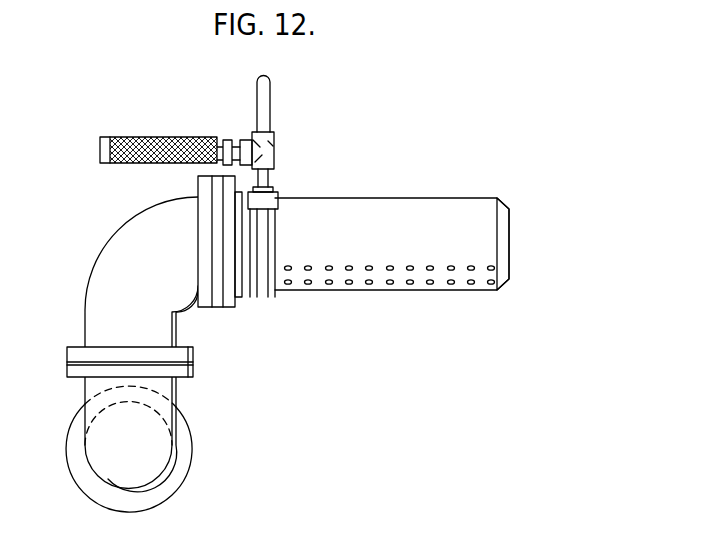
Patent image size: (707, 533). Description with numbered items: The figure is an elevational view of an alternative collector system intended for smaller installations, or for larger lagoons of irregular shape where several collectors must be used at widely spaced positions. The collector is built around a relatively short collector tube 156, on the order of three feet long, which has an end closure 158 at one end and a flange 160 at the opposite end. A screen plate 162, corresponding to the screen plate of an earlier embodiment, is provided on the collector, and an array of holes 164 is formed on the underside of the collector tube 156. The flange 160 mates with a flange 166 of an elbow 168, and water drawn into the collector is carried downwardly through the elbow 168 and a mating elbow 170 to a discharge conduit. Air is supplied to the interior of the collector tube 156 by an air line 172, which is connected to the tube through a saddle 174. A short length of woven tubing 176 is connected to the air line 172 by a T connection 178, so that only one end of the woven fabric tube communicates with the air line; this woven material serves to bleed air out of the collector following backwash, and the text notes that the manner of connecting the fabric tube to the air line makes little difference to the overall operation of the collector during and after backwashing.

The collector tube 156 is at (419, 203).
The end closure 158 is at (504, 230).
The flange 160 is at (238, 297).
The screen plate 162 is at (217, 306).
The array of holes 164 is at (392, 302).
The flange 166 is at (208, 217).
The elbow 168 is at (103, 248).
The mating elbow 170 is at (153, 449).
The air line 172 is at (263, 103).
The saddle 174 is at (273, 197).
The woven tubing 176 is at (145, 143).
The T connection 178 is at (267, 145).